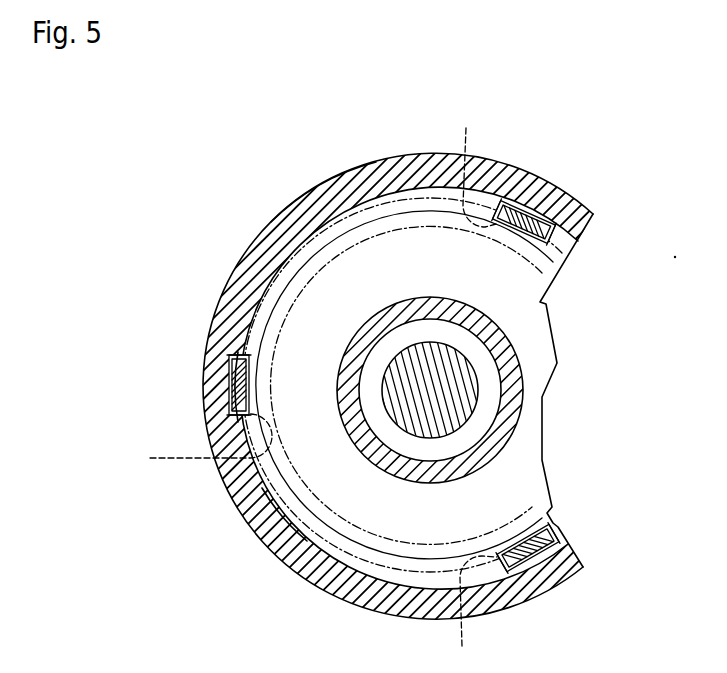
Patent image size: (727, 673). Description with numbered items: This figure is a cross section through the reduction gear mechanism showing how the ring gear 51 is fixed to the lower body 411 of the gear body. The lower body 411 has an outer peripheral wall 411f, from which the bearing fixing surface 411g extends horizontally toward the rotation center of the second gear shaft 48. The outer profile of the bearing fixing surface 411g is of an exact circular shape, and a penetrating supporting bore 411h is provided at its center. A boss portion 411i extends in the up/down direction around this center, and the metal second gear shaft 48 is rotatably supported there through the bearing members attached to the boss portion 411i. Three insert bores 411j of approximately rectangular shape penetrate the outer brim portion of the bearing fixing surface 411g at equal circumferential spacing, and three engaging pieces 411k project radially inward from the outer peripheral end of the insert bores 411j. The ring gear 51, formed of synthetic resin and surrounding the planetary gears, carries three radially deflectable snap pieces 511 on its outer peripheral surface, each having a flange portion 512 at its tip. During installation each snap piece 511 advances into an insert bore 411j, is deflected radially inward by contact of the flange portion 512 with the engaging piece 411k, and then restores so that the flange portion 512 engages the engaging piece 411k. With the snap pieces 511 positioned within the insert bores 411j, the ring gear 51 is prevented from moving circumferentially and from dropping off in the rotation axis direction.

The lower body 411 is at (236, 262).
The outer peripheral wall 411f is at (336, 184).
The bearing fixing surface 411g is at (272, 502).
The penetrating supporting bore 411h is at (470, 330).
The boss portion 411i is at (512, 406).
The insert bores 411j is at (224, 373).
The engaging pieces 411k is at (298, 388).
The second gear shaft 48 is at (455, 413).
The ring gear 51 is at (385, 212).
The snap piece 511 is at (236, 352).
The flange portion 512 is at (236, 391).